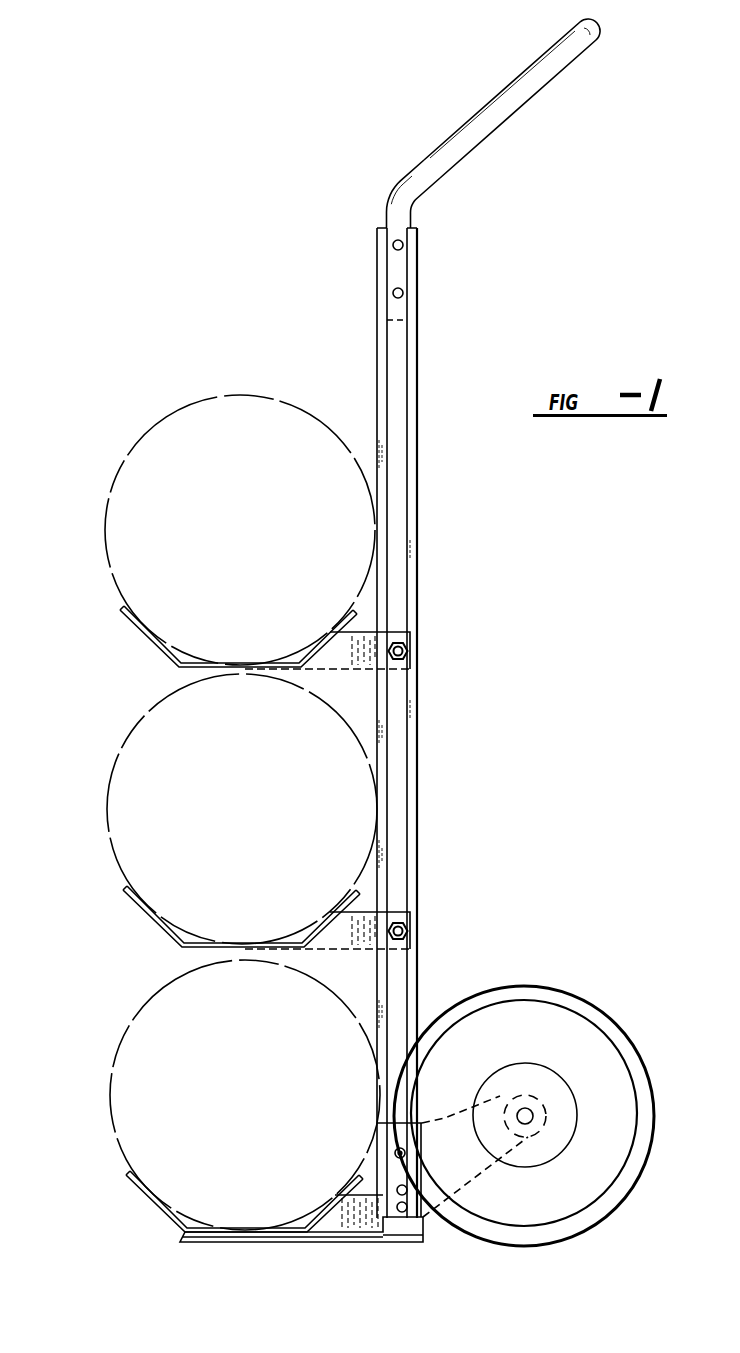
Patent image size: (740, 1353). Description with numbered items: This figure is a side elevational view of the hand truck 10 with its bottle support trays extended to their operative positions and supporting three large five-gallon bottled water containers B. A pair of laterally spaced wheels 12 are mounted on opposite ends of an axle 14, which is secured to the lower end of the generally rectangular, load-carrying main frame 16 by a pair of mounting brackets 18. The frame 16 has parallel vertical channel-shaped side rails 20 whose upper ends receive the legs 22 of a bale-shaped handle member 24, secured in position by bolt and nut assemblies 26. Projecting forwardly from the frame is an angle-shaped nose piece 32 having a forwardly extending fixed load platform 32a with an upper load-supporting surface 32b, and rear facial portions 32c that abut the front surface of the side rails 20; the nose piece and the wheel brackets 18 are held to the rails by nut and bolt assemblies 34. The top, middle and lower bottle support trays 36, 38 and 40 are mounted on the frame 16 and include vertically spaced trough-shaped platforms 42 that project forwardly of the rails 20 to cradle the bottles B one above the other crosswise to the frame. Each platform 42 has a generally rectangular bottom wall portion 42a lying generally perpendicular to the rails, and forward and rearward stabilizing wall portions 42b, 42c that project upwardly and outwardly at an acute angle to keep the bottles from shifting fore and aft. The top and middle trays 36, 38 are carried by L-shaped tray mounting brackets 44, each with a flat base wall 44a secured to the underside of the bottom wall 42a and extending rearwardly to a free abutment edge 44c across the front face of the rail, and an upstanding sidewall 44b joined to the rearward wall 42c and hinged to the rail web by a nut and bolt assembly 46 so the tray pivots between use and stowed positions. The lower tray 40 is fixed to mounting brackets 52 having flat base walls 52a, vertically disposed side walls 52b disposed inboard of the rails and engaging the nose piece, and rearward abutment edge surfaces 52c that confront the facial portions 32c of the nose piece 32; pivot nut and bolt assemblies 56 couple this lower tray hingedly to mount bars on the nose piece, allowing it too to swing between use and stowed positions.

The hand truck 10 is at (266, 166).
The wheels 12 is at (604, 1012).
The axle 14 is at (531, 1111).
The main frame 16 is at (421, 284).
The mounting brackets 18 is at (421, 1208).
The side rails 20 is at (419, 370).
The legs 22 is at (413, 216).
The handle member 24 is at (498, 81).
The bolt and nut assemblies 26 is at (393, 293).
The nose piece 32 is at (410, 1256).
The load platform 32a is at (205, 1240).
The load-supporting surface 32b is at (192, 1236).
The rear facial portions 32c is at (357, 1247).
The nut and bolt assemblies 34 is at (403, 1152).
The top bottle support tray 36 is at (141, 638).
The middle bottle support tray 38 is at (143, 914).
The lower bottle support tray 40 is at (138, 1194).
The platforms 42 is at (195, 870).
The bottom wall portion 42a is at (213, 662).
The forward stabilizing wall portion 42b is at (148, 633).
The rearward stabilizing wall portion 42c is at (325, 638).
The tray mounting brackets 44 is at (372, 784).
The base wall 44a is at (277, 669).
The sidewall 44b is at (405, 633).
The abutment edges 44c is at (410, 670).
The nut and bolt assembly 46 is at (407, 651).
The mounting brackets 52 is at (326, 1235).
The base walls 52a is at (260, 1238).
The side walls 52b is at (322, 1198).
The rearward abutment edge surfaces 52c is at (400, 1225).
The nut and bolt assemblies 56 is at (406, 1191).
The bottles B is at (161, 401).